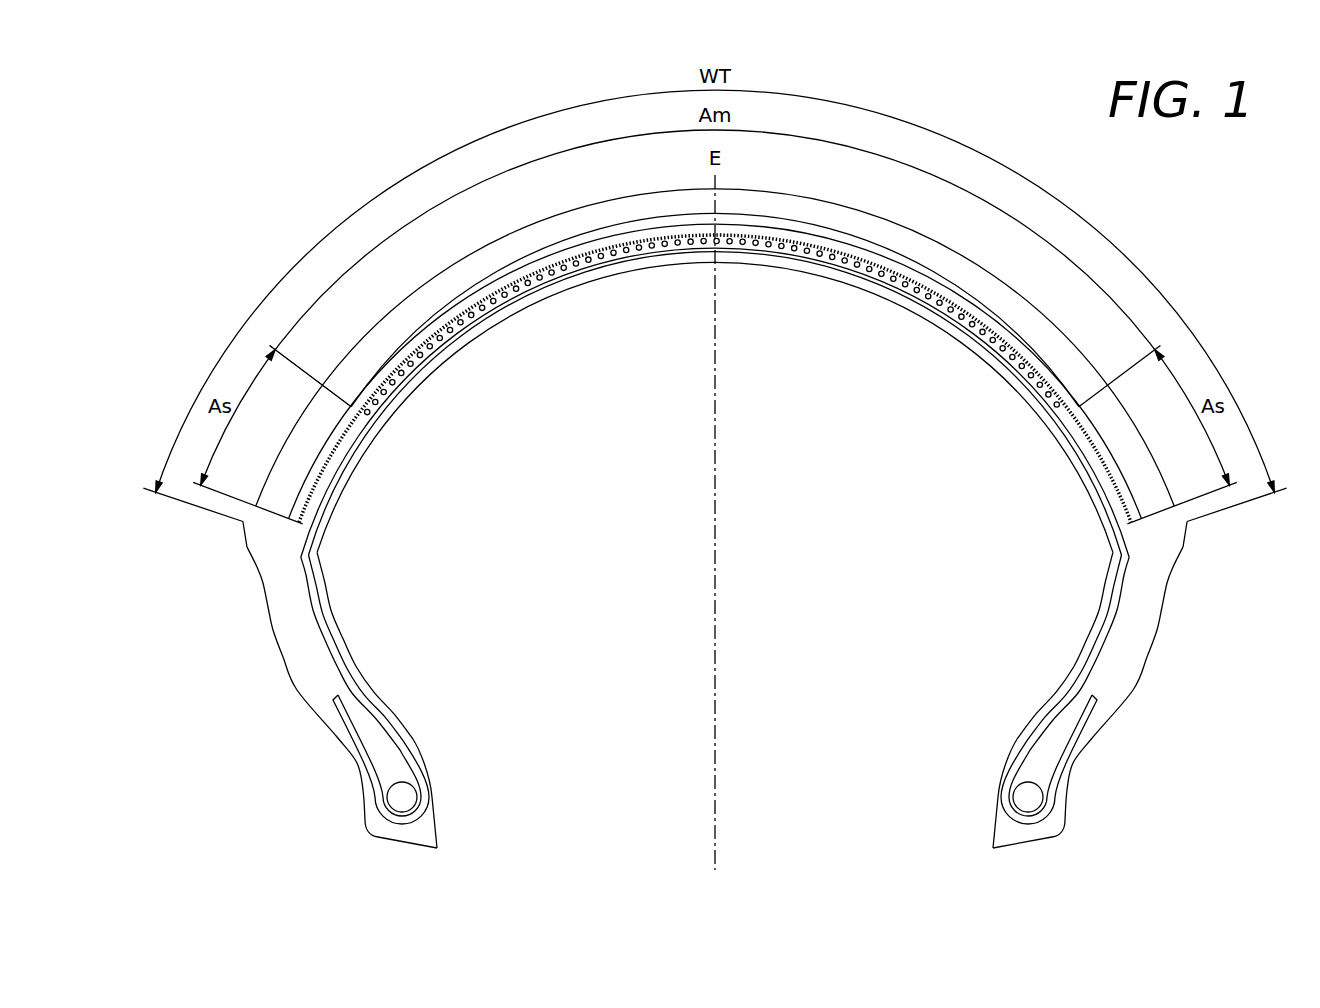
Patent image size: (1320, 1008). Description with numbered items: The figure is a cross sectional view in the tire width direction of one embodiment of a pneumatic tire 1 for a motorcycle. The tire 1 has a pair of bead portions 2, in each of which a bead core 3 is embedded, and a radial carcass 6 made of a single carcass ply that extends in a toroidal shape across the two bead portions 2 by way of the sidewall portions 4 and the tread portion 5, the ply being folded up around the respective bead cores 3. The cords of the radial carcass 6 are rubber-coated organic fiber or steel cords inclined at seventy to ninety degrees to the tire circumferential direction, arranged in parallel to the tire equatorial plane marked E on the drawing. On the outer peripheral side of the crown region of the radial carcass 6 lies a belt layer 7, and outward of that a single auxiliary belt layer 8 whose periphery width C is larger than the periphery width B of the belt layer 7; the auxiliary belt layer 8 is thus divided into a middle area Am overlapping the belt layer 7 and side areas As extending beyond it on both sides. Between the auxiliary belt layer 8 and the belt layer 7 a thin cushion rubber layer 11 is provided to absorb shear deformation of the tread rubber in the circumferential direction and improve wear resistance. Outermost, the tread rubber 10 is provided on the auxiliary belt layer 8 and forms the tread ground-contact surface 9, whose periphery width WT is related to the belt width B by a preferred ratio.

The pneumatic tire 1 is at (714, 469).
The bead portions 2 is at (647, 782).
The bead cores 3 is at (405, 797).
The sidewall portions 4 is at (255, 593).
The tread portion 5 is at (308, 390).
The radial carcass 6 is at (331, 654).
The belt layer 7 is at (594, 259).
The auxiliary belt layer 8 is at (489, 291).
The tread ground-contact surface 9 is at (931, 240).
The tread rubber 10 is at (555, 228).
The cushion rubber layer 11 is at (530, 284).